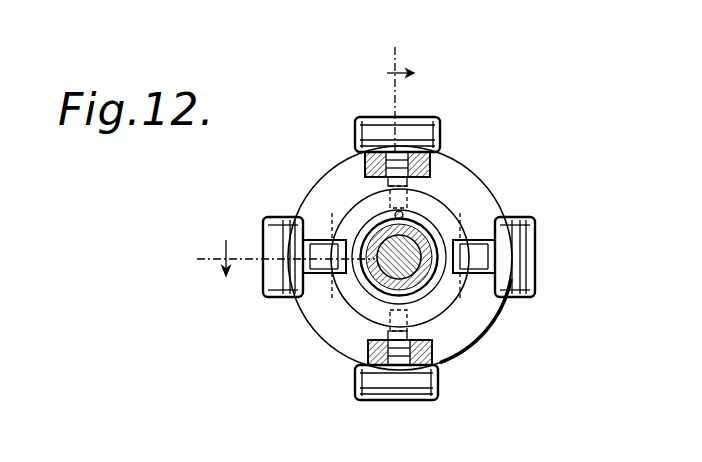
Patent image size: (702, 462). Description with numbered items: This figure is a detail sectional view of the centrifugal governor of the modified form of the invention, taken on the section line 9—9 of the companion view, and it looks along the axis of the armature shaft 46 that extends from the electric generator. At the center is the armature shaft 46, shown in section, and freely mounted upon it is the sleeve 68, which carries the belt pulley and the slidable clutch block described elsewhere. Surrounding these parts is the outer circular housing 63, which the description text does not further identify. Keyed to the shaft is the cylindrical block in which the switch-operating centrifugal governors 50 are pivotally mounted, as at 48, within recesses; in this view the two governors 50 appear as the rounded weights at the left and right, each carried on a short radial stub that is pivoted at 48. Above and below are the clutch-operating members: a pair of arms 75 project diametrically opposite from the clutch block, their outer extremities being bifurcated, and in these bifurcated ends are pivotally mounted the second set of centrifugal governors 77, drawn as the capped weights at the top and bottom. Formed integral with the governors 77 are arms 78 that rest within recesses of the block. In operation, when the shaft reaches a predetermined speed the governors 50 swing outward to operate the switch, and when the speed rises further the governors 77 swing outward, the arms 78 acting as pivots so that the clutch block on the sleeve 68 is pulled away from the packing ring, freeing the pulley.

The section line 9— 9 is at (295, 151).
The armature shaft 46 is at (378, 270).
The pivot 48 is at (331, 238).
The centrifugal governors 50 is at (270, 234).
The housing 63 is at (313, 188).
The sleeve 68 is at (420, 285).
The arms 75 is at (430, 175).
The centrifugal governors 77 is at (418, 124).
The arms 78 is at (386, 322).